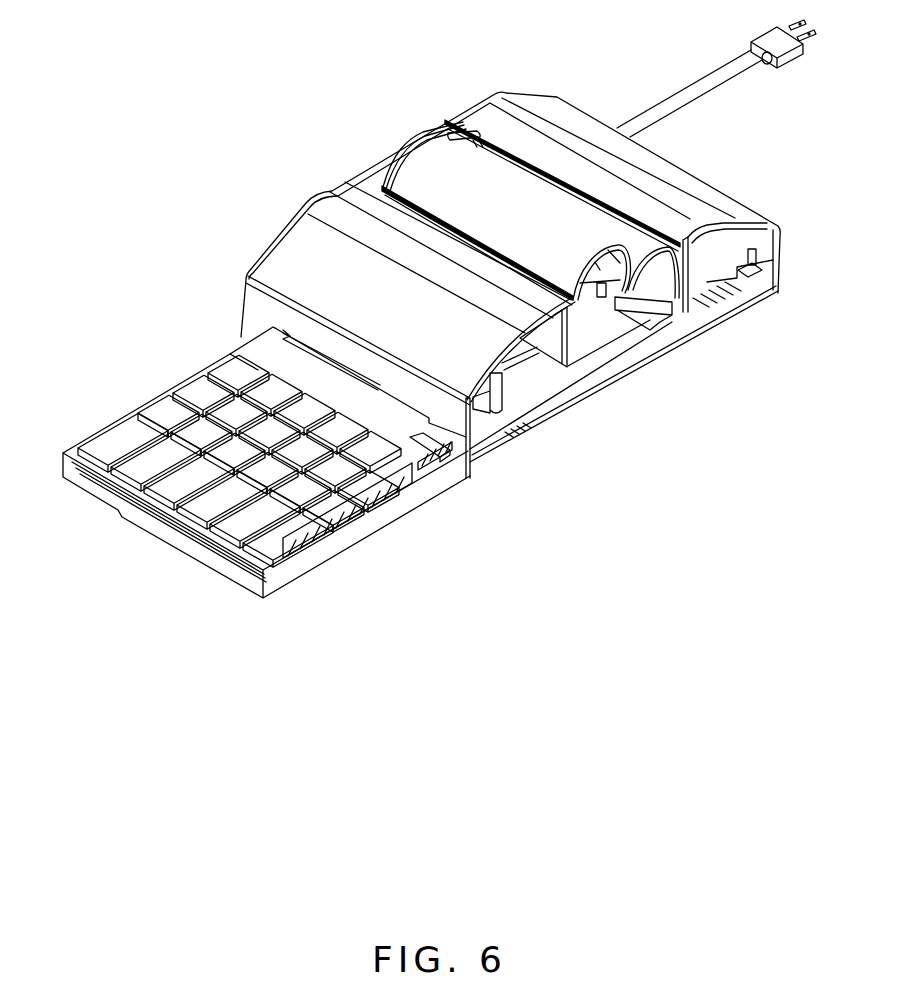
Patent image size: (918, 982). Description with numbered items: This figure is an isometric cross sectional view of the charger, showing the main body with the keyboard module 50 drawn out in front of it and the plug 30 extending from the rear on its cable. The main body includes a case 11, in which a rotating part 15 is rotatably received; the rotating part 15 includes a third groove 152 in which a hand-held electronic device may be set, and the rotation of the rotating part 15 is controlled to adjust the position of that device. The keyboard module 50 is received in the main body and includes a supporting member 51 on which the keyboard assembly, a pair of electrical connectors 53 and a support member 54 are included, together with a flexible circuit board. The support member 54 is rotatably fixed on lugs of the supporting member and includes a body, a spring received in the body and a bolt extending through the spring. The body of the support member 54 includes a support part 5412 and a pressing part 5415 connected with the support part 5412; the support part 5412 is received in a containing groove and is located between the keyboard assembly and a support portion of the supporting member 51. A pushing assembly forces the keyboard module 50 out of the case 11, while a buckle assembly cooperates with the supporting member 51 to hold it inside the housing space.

The case 11 is at (353, 193).
The rotating part 15 is at (433, 167).
The third groove 152 is at (500, 157).
The plug 30 is at (655, 115).
The keyboard module 50 is at (148, 404).
The supporting member 51 is at (265, 358).
The electrical connectors 53 is at (383, 503).
The support member 54 is at (443, 472).
The support part 5412 is at (413, 488).
The pressing part 5415 is at (470, 467).